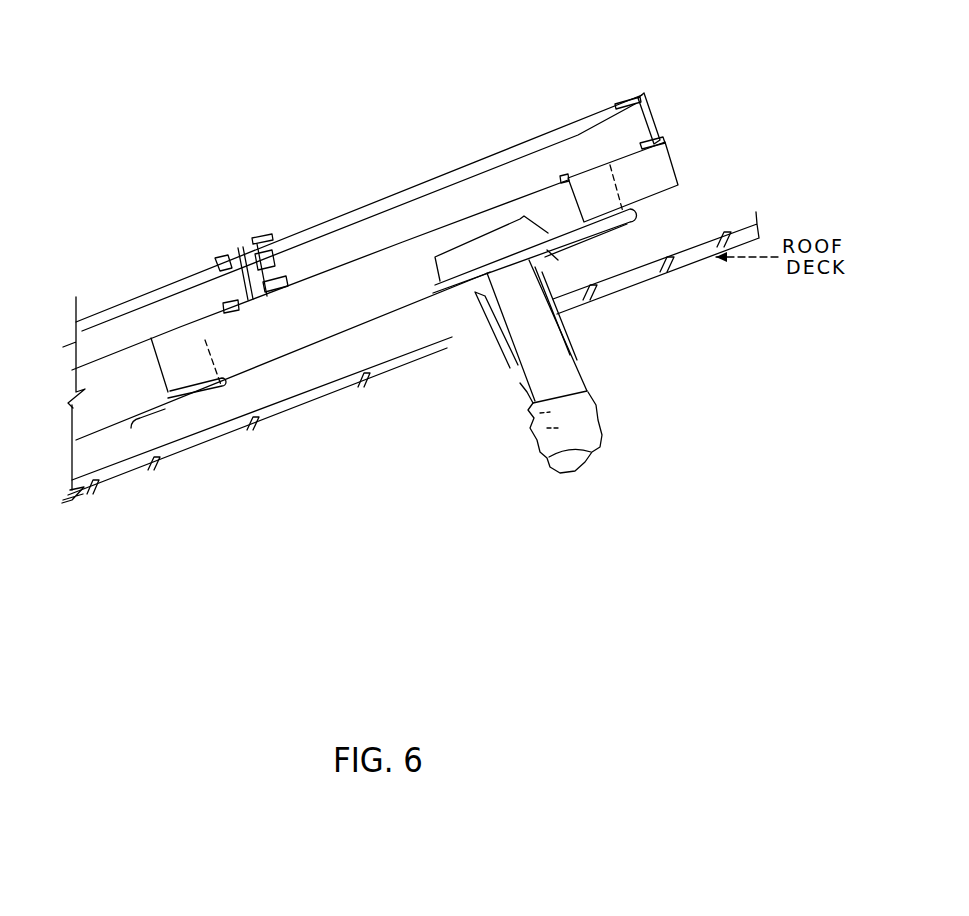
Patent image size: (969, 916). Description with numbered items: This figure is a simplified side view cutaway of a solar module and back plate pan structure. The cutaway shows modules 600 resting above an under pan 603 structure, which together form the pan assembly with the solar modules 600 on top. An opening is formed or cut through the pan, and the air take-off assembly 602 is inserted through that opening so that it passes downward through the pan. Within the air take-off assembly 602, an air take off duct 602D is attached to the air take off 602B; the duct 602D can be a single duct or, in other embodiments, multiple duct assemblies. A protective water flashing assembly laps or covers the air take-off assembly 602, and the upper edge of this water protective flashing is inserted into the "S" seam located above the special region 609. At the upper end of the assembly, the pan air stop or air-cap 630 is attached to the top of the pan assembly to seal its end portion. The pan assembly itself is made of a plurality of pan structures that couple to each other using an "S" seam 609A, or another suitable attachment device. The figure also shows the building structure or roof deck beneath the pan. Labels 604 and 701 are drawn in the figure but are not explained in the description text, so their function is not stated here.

The modules 600 is at (180, 278).
The air take-off assembly 602 is at (501, 253).
The air take off 602B is at (735, 360).
The air take off duct 602D is at (790, 440).
The under pan 603 is at (385, 305).
The clamp block 604 is at (472, 235).
The special region 609 is at (702, 225).
The "S" seam 609A is at (190, 403).
The pan air stop or air-cap 630 is at (825, 163).
The roof deck support 701 is at (483, 275).